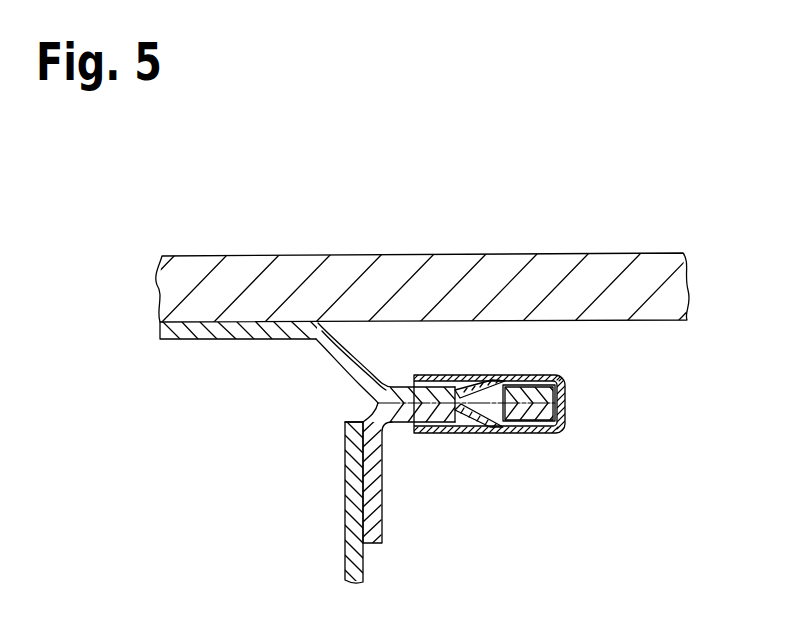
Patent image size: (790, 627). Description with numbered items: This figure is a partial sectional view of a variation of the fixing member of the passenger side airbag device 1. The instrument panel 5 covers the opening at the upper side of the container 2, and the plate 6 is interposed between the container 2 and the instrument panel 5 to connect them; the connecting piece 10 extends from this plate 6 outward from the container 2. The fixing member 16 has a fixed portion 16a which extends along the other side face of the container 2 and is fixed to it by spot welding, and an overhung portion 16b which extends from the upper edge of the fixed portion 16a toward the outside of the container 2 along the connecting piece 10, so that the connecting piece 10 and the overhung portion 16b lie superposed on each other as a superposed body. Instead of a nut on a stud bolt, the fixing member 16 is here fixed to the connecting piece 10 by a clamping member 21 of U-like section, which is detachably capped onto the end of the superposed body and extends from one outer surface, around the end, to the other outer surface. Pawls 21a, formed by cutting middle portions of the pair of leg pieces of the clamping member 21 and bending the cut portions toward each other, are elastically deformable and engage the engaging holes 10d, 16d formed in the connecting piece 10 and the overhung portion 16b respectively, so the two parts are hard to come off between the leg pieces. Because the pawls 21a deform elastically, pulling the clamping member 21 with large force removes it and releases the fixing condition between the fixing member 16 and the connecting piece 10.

The passenger side airbag device 1 is at (183, 376).
The container 2 is at (345, 527).
The instrument panel 5 is at (268, 270).
The plate 6 is at (261, 333).
The connecting piece 10 is at (400, 387).
The engaging hole 10d is at (457, 375).
The fixing member 16 is at (386, 548).
The fixed portion 16a is at (375, 488).
The overhung portion 16b is at (345, 452).
The engaging hole 16d is at (462, 433).
The clamping member 21 is at (566, 384).
The pawls 21a is at (478, 375).